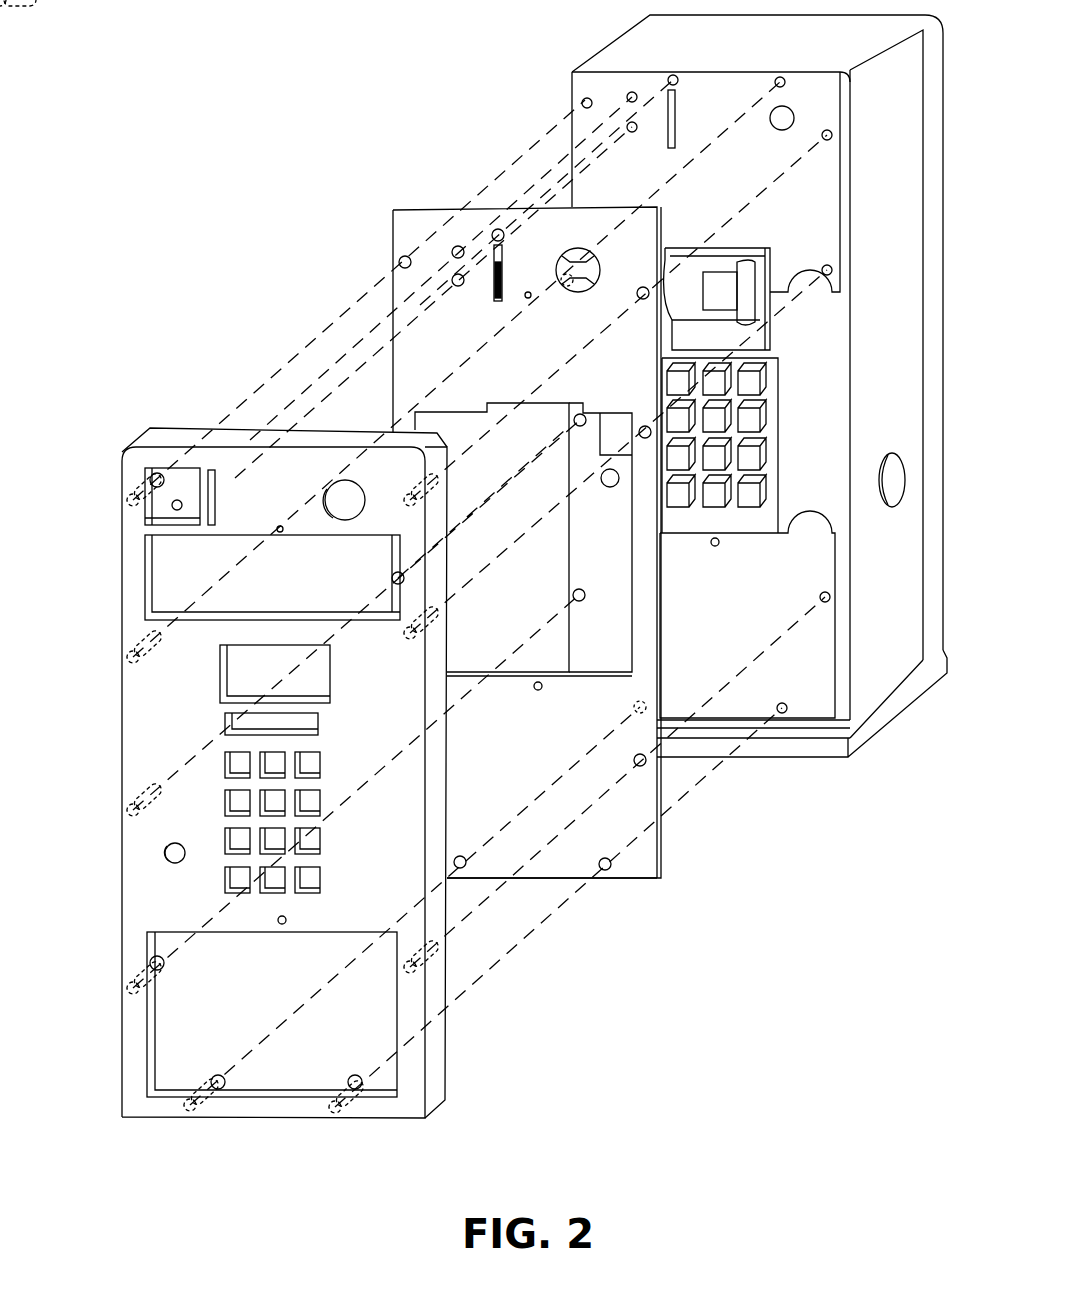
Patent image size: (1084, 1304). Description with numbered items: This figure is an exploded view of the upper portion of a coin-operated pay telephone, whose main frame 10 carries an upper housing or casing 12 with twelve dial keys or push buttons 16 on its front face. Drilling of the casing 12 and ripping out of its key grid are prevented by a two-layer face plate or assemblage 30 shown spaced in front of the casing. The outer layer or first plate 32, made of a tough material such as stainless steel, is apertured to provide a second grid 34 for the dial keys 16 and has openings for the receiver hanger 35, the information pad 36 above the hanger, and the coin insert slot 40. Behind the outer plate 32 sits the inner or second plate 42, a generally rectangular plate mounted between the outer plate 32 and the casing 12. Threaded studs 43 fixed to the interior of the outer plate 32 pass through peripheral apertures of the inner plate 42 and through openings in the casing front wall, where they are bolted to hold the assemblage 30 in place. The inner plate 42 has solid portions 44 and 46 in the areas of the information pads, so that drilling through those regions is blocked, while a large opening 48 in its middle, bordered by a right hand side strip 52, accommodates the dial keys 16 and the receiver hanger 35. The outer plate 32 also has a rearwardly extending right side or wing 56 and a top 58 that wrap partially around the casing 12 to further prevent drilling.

The main frame 10 is at (835, 750).
The upper housing or casing 12 is at (887, 662).
The dial keys or push buttons 16 is at (757, 452).
The two-layer face plate or assemblage 30 is at (335, 165).
The outer layer or first plate 32 is at (130, 557).
The second grid 34 is at (233, 822).
The receiver hanger 35 is at (750, 313).
The information pad 36 is at (722, 208).
The coin insert slot 40 is at (668, 108).
The inner or second plate 42 is at (640, 855).
The threaded studs 43 is at (130, 805).
The solid portion 44 is at (470, 341).
The solid portion 46 is at (575, 761).
The large opening 48 is at (487, 666).
The right hand side strip 52 is at (655, 608).
The right side or wing 56 is at (435, 1047).
The top 58 is at (175, 432).